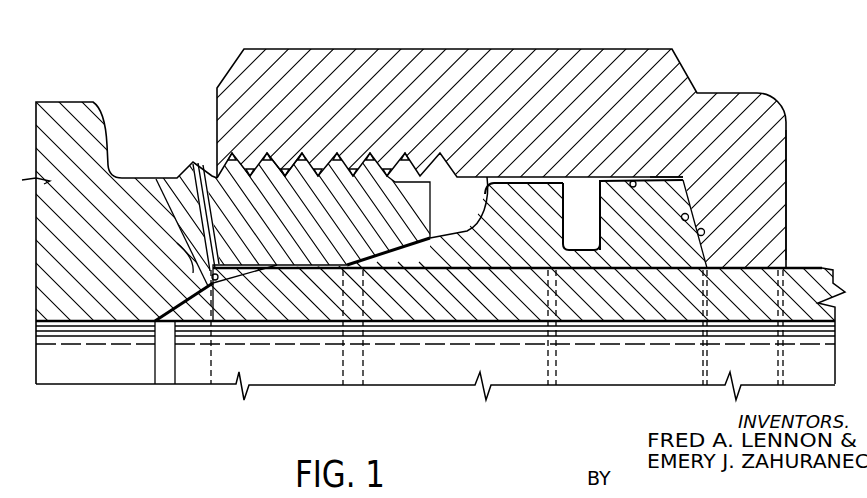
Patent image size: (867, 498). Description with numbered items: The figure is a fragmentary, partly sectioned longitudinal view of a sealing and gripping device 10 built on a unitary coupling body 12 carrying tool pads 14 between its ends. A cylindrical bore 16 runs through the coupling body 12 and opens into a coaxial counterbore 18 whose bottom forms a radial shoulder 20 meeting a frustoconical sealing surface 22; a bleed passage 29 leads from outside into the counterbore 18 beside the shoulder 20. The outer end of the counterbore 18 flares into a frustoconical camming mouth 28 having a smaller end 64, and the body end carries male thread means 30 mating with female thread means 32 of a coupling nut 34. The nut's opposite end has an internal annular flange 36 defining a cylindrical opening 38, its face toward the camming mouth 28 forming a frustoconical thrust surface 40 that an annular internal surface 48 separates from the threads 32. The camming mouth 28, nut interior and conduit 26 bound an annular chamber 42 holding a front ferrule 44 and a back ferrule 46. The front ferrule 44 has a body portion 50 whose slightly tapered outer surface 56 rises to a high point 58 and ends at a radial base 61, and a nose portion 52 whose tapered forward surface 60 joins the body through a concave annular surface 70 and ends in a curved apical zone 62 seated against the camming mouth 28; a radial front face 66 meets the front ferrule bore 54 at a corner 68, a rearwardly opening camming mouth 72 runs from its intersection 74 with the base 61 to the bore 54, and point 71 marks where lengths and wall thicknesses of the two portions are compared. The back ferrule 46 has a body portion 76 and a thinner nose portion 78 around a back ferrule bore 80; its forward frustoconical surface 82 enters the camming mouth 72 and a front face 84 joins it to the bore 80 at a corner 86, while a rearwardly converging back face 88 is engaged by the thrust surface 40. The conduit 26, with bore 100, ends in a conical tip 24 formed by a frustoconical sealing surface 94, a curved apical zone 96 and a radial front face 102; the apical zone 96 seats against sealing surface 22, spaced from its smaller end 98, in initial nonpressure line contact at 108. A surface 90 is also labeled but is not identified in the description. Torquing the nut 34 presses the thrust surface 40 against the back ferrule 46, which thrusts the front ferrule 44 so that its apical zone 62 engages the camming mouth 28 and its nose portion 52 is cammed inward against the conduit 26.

The sealing and gripping device 10 is at (163, 92).
The coupling body 12 is at (118, 170).
The tool pads 14 is at (72, 100).
The bore 16 is at (84, 327).
The counterbore 18 is at (277, 270).
The shoulder 20 is at (180, 221).
The sealing surface 22 is at (148, 309).
The conical tip 24 is at (199, 325).
The conduit 26 is at (391, 332).
The camming mouth 28 is at (412, 242).
The bleed passage 29 is at (181, 203).
The male thread means 30 is at (282, 168).
The female thread means 32 is at (396, 167).
The coupling nut 34 is at (588, 53).
The internal annular flange 36 is at (785, 176).
The cylindrical opening 38 is at (733, 264).
The thrust surface 40 is at (688, 214).
The annular chamber 42 is at (597, 182).
The front ferrule 44 is at (531, 343).
The back ferrule 46 is at (650, 326).
The annular internal surface 48 is at (636, 182).
The body portion 50 is at (440, 270).
The nose portion 52 is at (390, 320).
The front ferrule bore 54 is at (476, 341).
The outer surface 56 is at (505, 181).
The high point 58 is at (485, 182).
The tapered external forward surface portion 60 is at (388, 256).
The radial base 61 is at (574, 182).
The curved apical zone 62 is at (353, 261).
The smaller end 64 is at (317, 264).
The front face 66 is at (347, 256).
The corner 68 is at (352, 282).
The concave annular surface 70 is at (458, 191).
The point 71 is at (448, 237).
The camming mouth 72 is at (558, 270).
The intersection 74 is at (565, 250).
The body portion 76 is at (612, 272).
The nose portion 78 is at (597, 326).
The back ferrule bore 80 is at (663, 272).
The frustoconical surface 82 is at (561, 250).
The front face 84 is at (483, 280).
The corner 86 is at (549, 270).
The back face 88 is at (699, 236).
The gland face 90 is at (667, 178).
The sealing surface 94 is at (240, 264).
The curved apical zone 96 is at (160, 318).
The smaller end 98 is at (150, 312).
The bore 100 is at (254, 324).
The front face 102 is at (155, 326).
The line of initial nonpressure contact 108 is at (178, 301).